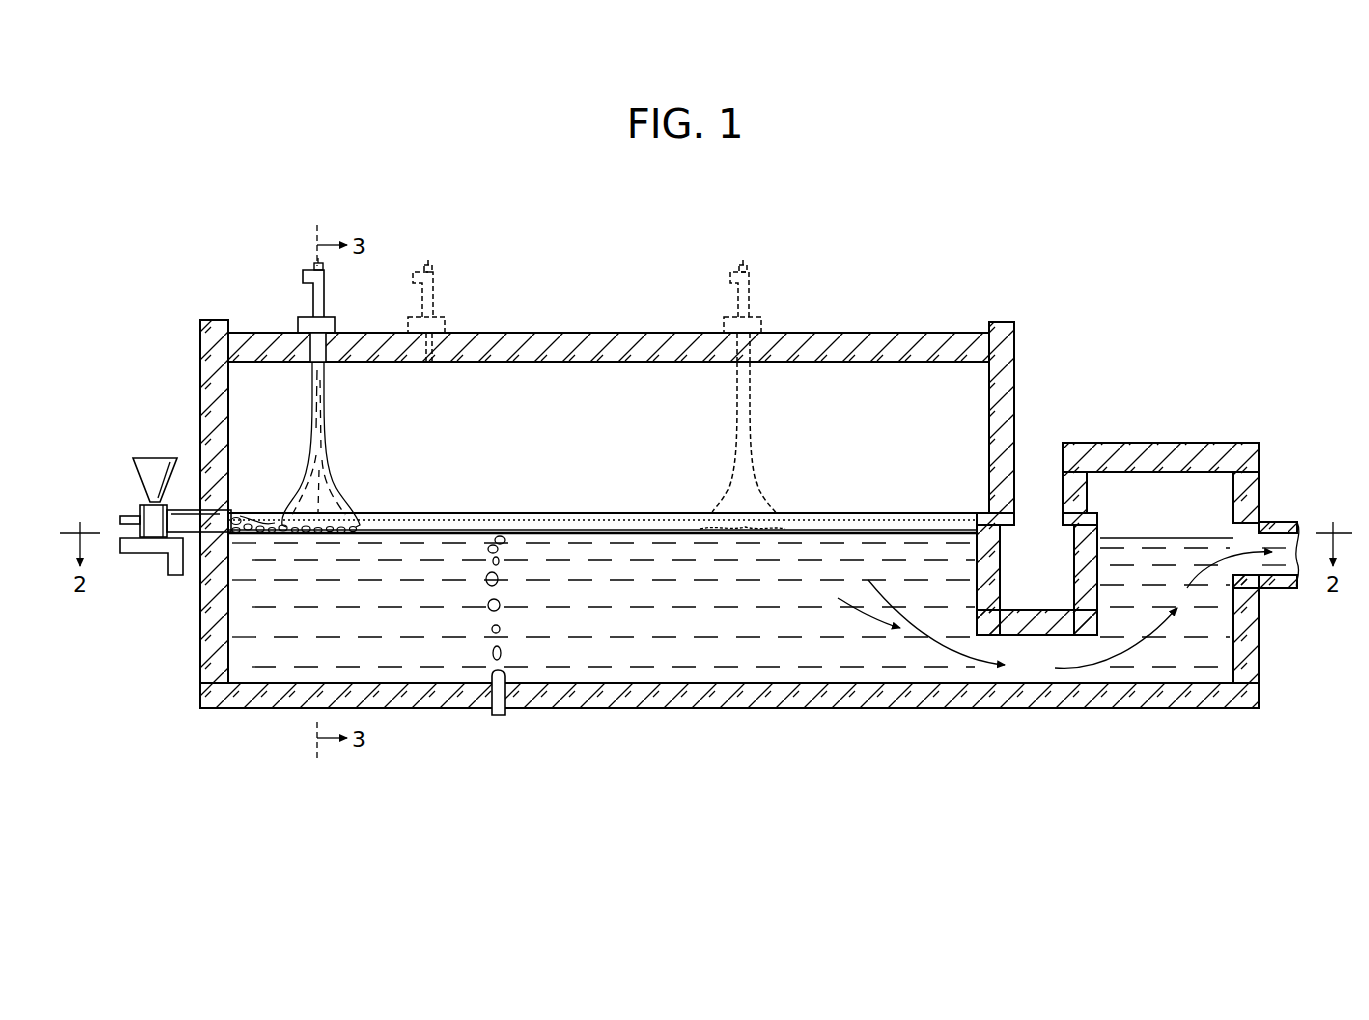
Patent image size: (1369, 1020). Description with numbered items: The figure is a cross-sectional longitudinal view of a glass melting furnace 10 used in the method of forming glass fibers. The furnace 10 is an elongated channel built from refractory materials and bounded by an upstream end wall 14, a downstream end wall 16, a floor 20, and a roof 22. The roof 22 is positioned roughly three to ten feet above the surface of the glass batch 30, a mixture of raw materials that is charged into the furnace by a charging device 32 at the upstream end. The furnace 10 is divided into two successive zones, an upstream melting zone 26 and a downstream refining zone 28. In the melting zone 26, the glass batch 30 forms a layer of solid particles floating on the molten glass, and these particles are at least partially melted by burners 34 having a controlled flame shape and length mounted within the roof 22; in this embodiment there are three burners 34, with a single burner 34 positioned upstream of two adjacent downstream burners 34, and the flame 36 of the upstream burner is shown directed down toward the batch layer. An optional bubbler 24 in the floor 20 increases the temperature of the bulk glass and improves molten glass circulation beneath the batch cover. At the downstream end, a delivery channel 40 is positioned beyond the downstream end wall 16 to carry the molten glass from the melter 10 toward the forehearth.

The glass melting furnace 10 is at (1022, 286).
The upstream end wall 14 is at (200, 394).
The downstream end wall 16 is at (1014, 395).
The floor 20 is at (866, 708).
The roof 22 is at (575, 333).
The bubbler 24 is at (505, 712).
The melting zone 26 is at (603, 565).
The refining zone 28 is at (1108, 565).
The glass batch 30 is at (258, 520).
The charging device 32 is at (148, 550).
The burner 34 is at (310, 298).
The water spray 36 is at (328, 395).
The delivery channel 40 is at (1280, 522).